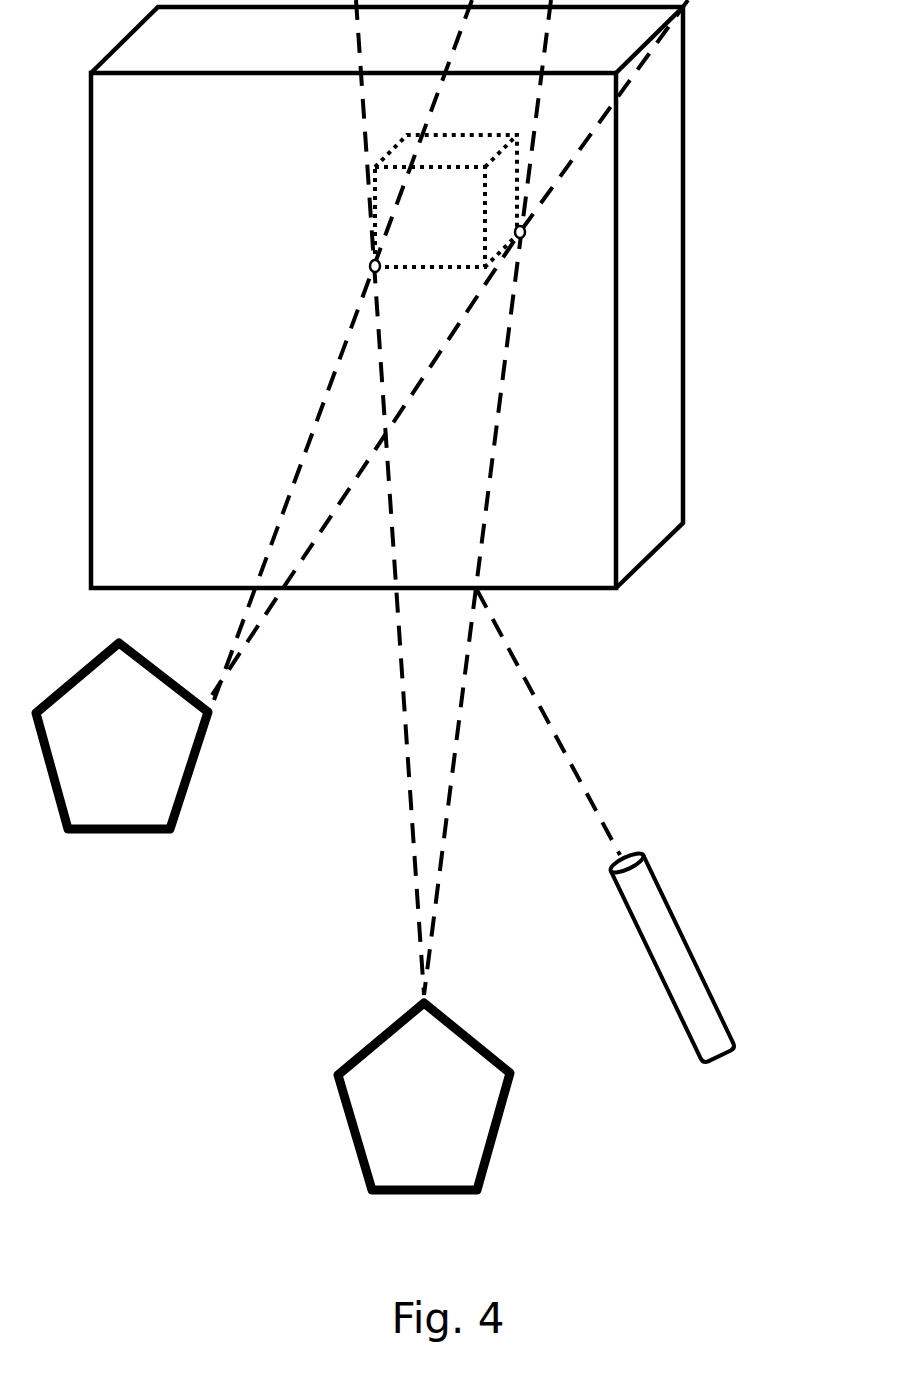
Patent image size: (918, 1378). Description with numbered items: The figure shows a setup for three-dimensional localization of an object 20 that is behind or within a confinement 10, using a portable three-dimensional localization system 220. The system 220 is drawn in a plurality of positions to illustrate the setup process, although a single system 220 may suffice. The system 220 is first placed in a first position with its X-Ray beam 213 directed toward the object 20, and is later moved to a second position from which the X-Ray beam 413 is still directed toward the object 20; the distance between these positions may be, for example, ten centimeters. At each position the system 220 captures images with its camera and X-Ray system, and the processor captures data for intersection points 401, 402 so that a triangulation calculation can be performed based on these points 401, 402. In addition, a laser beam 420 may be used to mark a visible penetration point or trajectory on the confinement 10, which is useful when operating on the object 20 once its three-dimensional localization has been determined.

The confinement 10 is at (657, 282).
The object 20 is at (458, 245).
The X-Ray beam 213 is at (460, 747).
The 3D localization system 220 is at (78, 770).
The intersection point 401 is at (522, 240).
The intersection point 402 is at (370, 267).
The X-Ray beam 413 is at (258, 623).
The laser beam 420 is at (680, 925).